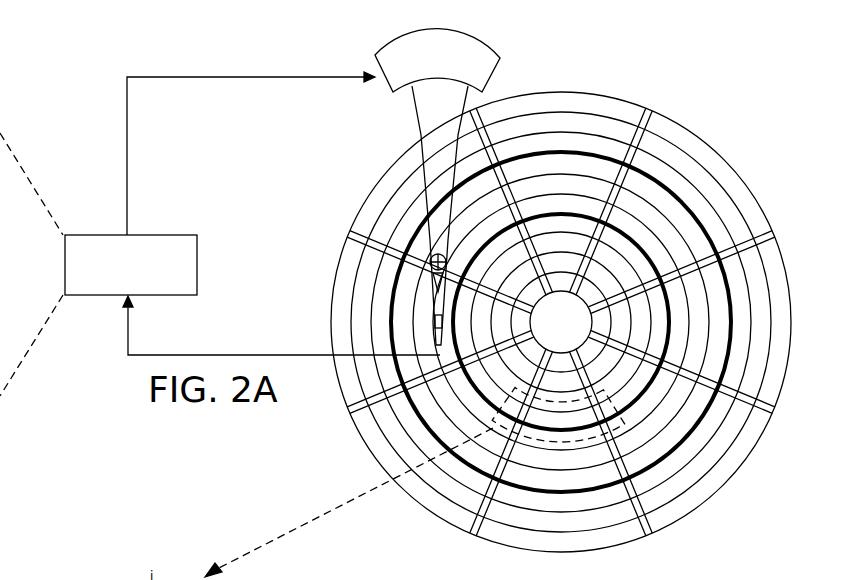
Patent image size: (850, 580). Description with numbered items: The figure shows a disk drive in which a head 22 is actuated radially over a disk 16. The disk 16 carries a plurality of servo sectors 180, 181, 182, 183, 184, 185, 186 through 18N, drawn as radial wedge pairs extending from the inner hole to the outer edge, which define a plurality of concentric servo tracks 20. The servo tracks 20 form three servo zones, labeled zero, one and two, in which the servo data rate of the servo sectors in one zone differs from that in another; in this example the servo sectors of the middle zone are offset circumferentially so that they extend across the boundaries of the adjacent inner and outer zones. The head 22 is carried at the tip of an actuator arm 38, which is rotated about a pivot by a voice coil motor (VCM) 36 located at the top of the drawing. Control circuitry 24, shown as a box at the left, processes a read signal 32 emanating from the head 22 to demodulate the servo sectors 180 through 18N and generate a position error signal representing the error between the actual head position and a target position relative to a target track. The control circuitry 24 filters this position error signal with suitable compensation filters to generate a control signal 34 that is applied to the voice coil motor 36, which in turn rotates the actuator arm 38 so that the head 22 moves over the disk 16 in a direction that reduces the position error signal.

The disk 16 is at (563, 315).
The servo sector 18N is at (474, 108).
The servo sector 180 is at (650, 108).
The servo sector 181 is at (776, 233).
The servo sector 182 is at (776, 412).
The servo sector 183 is at (650, 539).
The servo sector 184 is at (471, 539).
The servo sector 185 is at (347, 412).
The servo sector 186 is at (347, 232).
The servo tracks 20 is at (560, 120).
The head 22 is at (433, 322).
The control circuitry 24 is at (165, 235).
The read signal 32 is at (240, 355).
The control signal 34 is at (127, 147).
The voice coil motor 36 is at (393, 92).
The actuator arm 38 is at (421, 135).